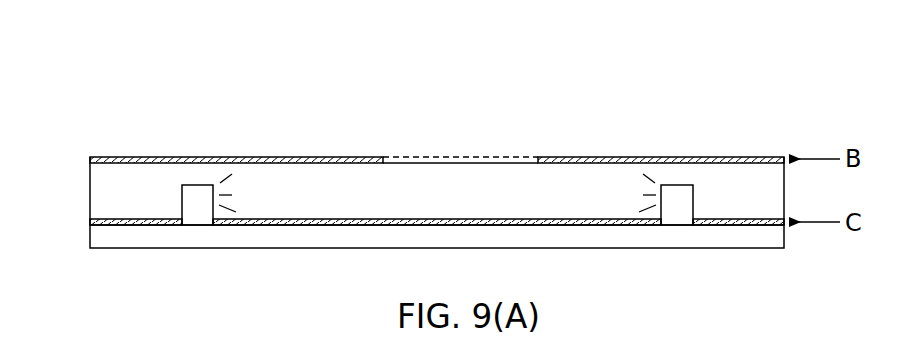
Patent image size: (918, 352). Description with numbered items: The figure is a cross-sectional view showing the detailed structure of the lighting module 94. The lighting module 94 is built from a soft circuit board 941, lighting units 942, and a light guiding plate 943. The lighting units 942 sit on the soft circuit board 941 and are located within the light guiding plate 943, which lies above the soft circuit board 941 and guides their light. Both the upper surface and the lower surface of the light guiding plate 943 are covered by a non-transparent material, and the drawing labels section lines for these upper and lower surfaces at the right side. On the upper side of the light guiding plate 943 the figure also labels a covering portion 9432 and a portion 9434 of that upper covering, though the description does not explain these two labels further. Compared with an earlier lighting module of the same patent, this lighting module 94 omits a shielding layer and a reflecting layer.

The lighting module 94 is at (400, 166).
The soft circuit board 941 is at (90, 235).
The lighting units 942 is at (195, 214).
The light guiding plate 943 is at (404, 160).
The reflective layer 9432 is at (351, 157).
The light outlet opening 9434 is at (497, 157).